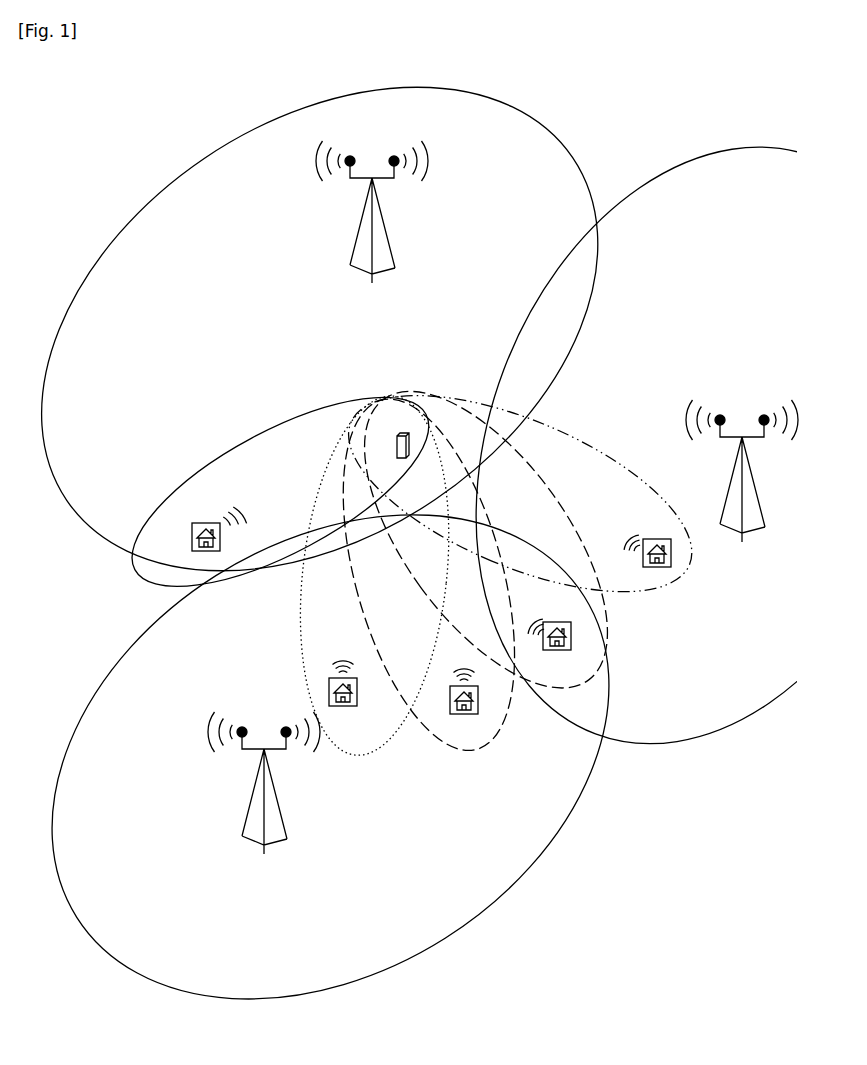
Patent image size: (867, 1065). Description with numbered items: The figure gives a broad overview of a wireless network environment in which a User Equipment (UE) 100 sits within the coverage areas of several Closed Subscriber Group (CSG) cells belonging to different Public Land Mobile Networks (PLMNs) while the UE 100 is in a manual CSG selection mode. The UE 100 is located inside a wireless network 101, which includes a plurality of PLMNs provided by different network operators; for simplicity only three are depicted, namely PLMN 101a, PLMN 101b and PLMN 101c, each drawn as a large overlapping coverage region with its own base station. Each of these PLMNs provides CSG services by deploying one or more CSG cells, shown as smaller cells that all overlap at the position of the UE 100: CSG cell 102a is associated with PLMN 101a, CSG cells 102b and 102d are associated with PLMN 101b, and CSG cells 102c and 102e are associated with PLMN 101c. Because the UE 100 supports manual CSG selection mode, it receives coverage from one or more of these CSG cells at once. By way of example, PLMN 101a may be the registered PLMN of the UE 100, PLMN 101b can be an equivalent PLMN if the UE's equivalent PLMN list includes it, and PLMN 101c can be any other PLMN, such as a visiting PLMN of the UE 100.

The User Equipment (UE) 100 is at (432, 360).
The wireless network 101 is at (625, 788).
The PLMN 101a is at (344, 335).
The PLMN 101b is at (349, 740).
The PLMN 101c is at (631, 445).
The CSG cell 102a is at (232, 450).
The CSG cell 102b is at (353, 750).
The CSG cell 102c is at (680, 577).
The CSG cell 102d is at (487, 748).
The CSG cell 102e is at (610, 640).